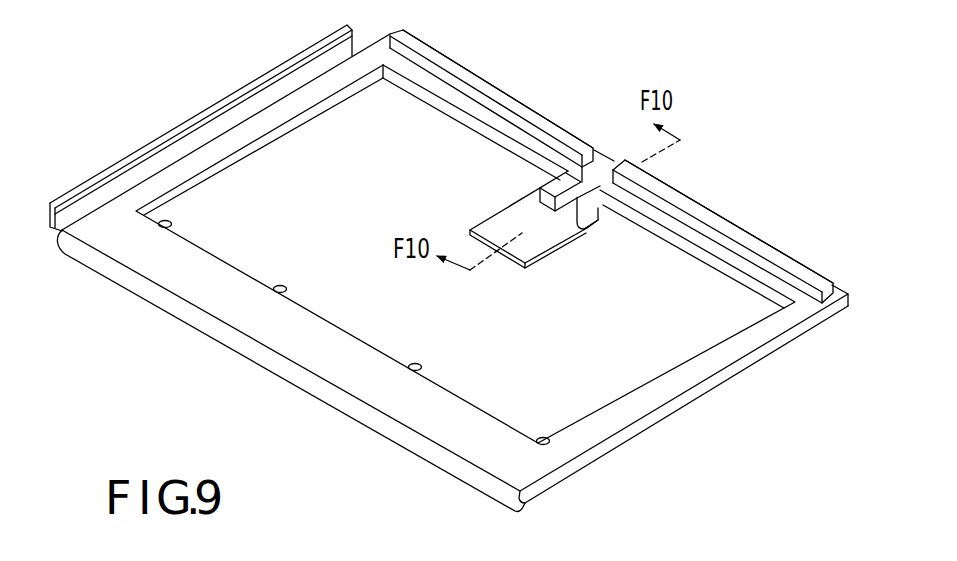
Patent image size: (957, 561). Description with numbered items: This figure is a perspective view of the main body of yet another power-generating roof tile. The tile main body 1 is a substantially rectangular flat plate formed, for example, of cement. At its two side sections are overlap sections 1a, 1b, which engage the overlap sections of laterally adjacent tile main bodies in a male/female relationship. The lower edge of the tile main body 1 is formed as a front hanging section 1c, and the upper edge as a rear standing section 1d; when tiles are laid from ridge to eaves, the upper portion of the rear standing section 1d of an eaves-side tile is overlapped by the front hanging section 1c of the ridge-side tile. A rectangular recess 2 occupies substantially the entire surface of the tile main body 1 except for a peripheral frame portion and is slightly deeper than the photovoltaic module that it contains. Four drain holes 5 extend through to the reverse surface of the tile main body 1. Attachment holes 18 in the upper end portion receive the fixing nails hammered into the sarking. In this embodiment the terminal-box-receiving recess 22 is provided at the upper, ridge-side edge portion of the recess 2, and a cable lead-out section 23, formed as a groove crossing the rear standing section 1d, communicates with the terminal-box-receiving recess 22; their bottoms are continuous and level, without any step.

The tile main body 1 is at (746, 372).
The overlap section 1a is at (240, 117).
The overlap section 1b is at (688, 405).
The front hanging section 1c is at (428, 440).
The rear standing section 1d is at (747, 228).
The recess 2 is at (600, 405).
The drain holes 5 is at (172, 223).
The attachment holes 18 is at (447, 61).
The terminal-box-receiving recess 22 is at (527, 223).
The cable lead-out section 23 is at (588, 190).